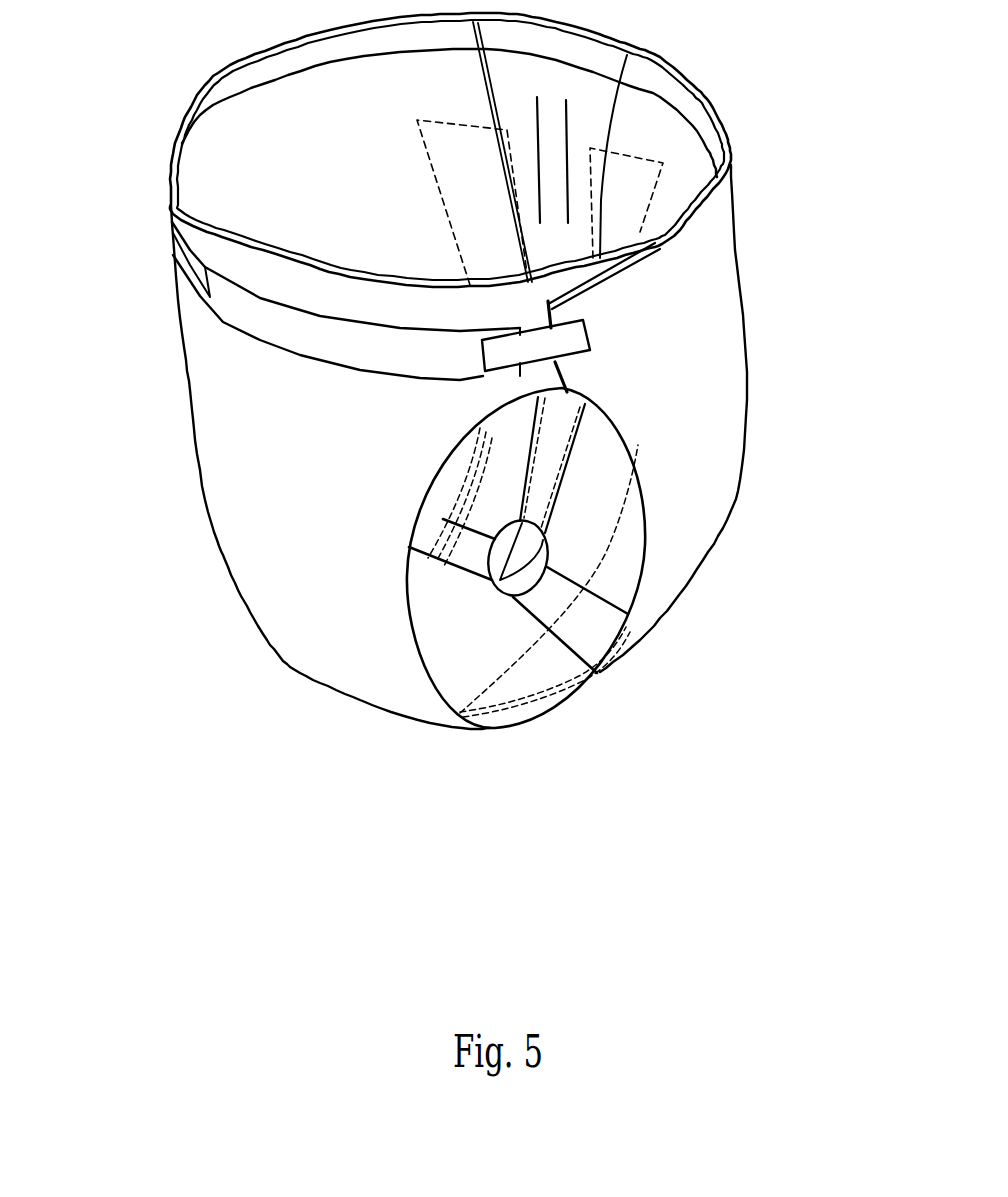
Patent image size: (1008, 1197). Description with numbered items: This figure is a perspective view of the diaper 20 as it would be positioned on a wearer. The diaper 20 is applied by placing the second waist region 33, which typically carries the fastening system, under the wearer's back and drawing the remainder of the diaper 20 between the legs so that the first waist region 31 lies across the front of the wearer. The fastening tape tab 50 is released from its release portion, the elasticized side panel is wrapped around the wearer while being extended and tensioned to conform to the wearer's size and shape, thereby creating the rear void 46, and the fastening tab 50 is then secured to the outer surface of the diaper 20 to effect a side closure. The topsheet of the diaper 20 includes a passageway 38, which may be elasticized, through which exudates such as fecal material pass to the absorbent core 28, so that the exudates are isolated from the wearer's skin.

The diaper 20 is at (460, 790).
The absorbent core 28 is at (601, 530).
The first waist region 31 is at (172, 212).
The second waist region 33 is at (690, 220).
The passageway 38 is at (537, 577).
The rear void 46 is at (583, 248).
The fastening tape tab 50 is at (538, 355).